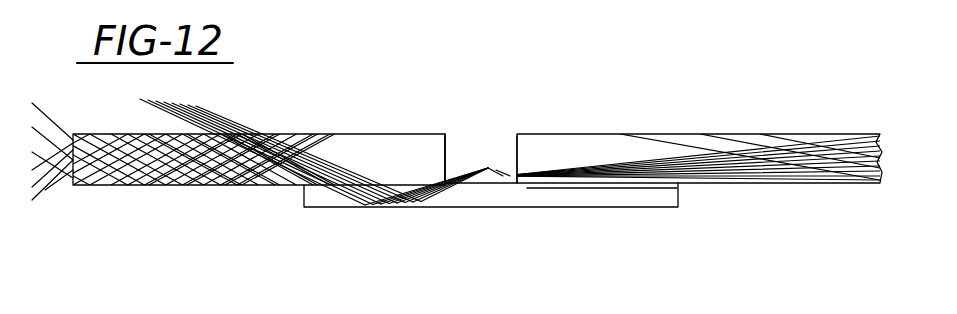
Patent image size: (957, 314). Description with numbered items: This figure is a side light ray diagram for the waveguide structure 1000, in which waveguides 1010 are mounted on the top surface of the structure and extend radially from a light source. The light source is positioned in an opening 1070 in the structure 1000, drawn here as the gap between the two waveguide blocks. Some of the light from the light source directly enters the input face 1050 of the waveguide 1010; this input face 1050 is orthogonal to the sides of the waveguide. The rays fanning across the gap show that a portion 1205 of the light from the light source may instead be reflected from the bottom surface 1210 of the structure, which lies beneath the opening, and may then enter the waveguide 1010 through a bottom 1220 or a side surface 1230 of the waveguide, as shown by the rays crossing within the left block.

The waveguide structure 1000 is at (667, 197).
The waveguide 1010 is at (383, 143).
The input face 1050 is at (450, 143).
The opening 1070 is at (498, 190).
The portion of the light 1205 is at (485, 173).
The bottom surface 1210 is at (387, 207).
The bottom 1220 is at (220, 187).
The side surface 1230 is at (280, 137).